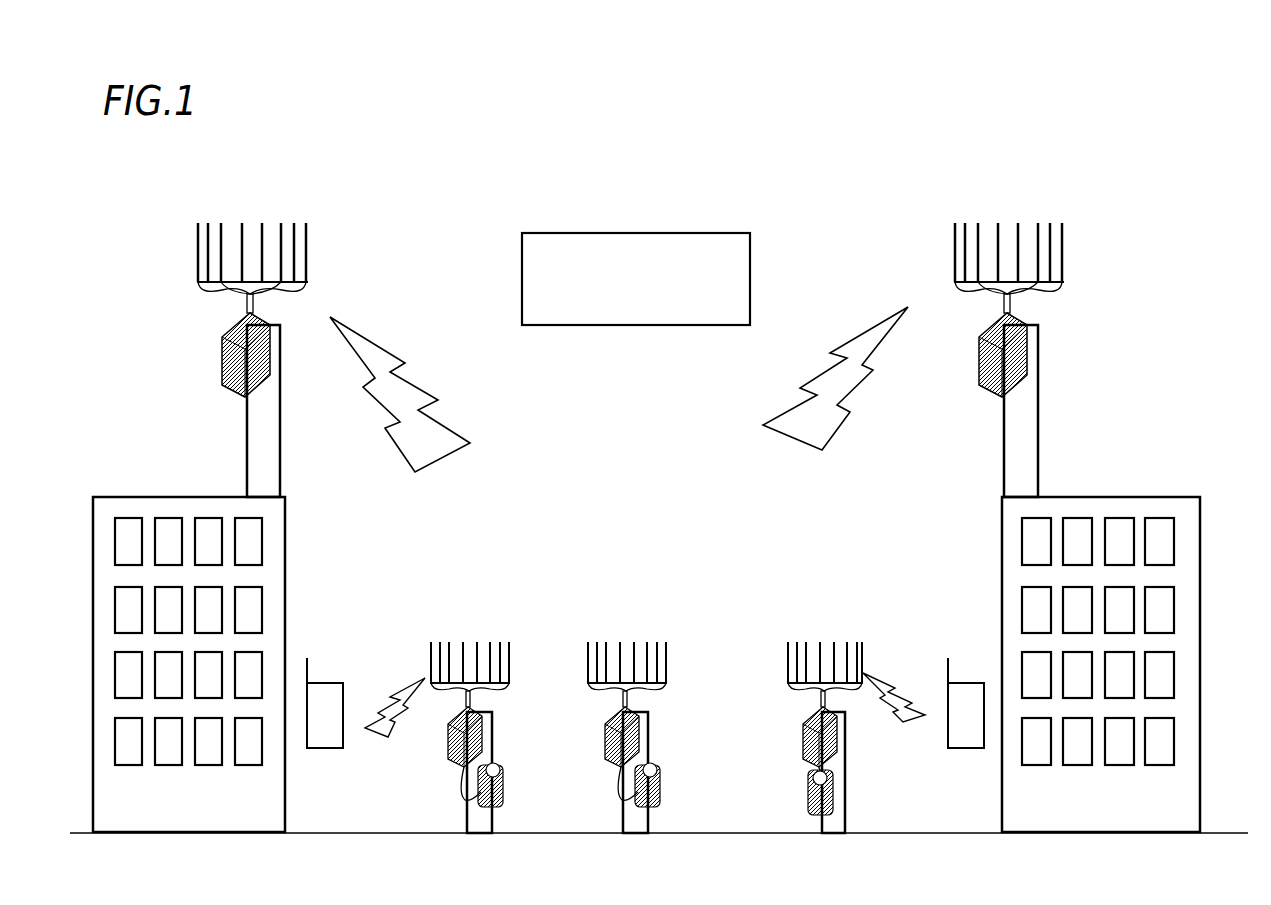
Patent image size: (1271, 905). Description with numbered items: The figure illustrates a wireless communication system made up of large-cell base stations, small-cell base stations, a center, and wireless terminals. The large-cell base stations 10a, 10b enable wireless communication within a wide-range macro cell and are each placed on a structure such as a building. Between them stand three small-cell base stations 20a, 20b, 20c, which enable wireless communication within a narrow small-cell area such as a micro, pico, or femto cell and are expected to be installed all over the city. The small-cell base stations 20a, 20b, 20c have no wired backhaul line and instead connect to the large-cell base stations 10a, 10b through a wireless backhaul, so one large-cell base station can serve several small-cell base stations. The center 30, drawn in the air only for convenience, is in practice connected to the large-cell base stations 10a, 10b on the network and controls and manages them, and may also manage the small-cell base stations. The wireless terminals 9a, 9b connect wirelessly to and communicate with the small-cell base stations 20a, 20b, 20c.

The center 30 is at (675, 232).
The large-cell base station 10a is at (182, 324).
The large-cell base station 10b is at (1100, 335).
The small-cell base station 20a is at (486, 624).
The small-cell base station 20b is at (644, 624).
The small-cell base station 20c is at (830, 628).
The wireless terminal 9a is at (330, 752).
The wireless terminal 9b is at (968, 752).